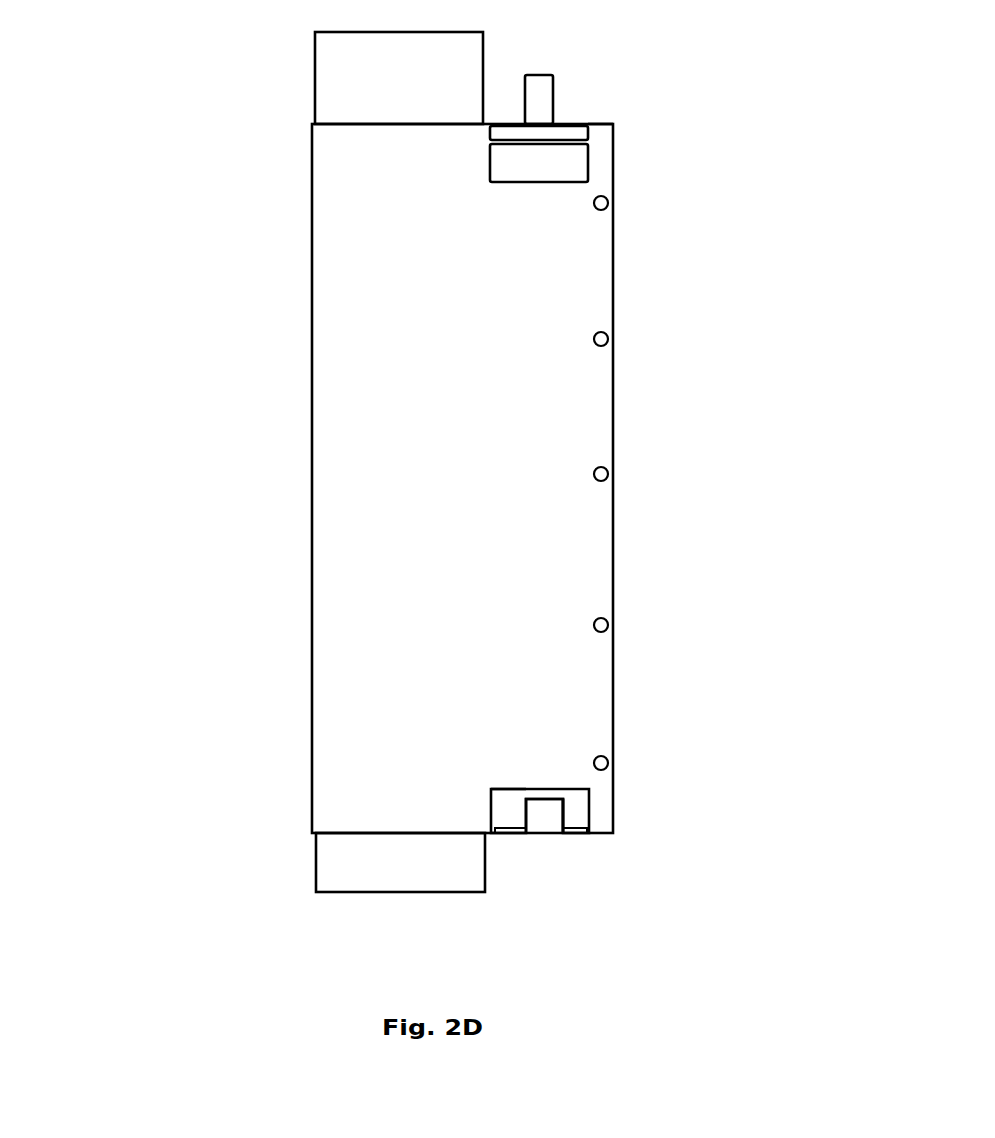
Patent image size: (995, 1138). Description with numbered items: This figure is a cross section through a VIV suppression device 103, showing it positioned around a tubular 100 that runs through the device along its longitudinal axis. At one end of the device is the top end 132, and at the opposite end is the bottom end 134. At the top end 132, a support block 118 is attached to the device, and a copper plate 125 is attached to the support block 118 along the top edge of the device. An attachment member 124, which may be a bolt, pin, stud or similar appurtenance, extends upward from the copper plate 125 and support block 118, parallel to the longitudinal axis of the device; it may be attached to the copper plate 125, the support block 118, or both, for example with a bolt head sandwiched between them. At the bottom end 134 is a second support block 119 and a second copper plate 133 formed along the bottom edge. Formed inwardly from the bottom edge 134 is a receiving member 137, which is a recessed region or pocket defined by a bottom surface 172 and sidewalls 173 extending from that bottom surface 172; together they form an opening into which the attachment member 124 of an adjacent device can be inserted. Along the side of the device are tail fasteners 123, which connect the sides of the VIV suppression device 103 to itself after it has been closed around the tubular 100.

The tubular 100 is at (310, 73).
The VIV suppression device 103 is at (310, 412).
The support block 118 is at (590, 166).
The support block 119 is at (593, 797).
The tail fasteners 123 is at (613, 753).
The attachment member 124 is at (558, 85).
The copper plate 125 is at (590, 133).
The top end 132 is at (608, 120).
The copper plate 133 is at (593, 833).
The bottom end 134 is at (507, 835).
The receiving member 137 is at (542, 812).
The bottom surface 172 is at (537, 793).
The sidewalls 173 is at (562, 760).